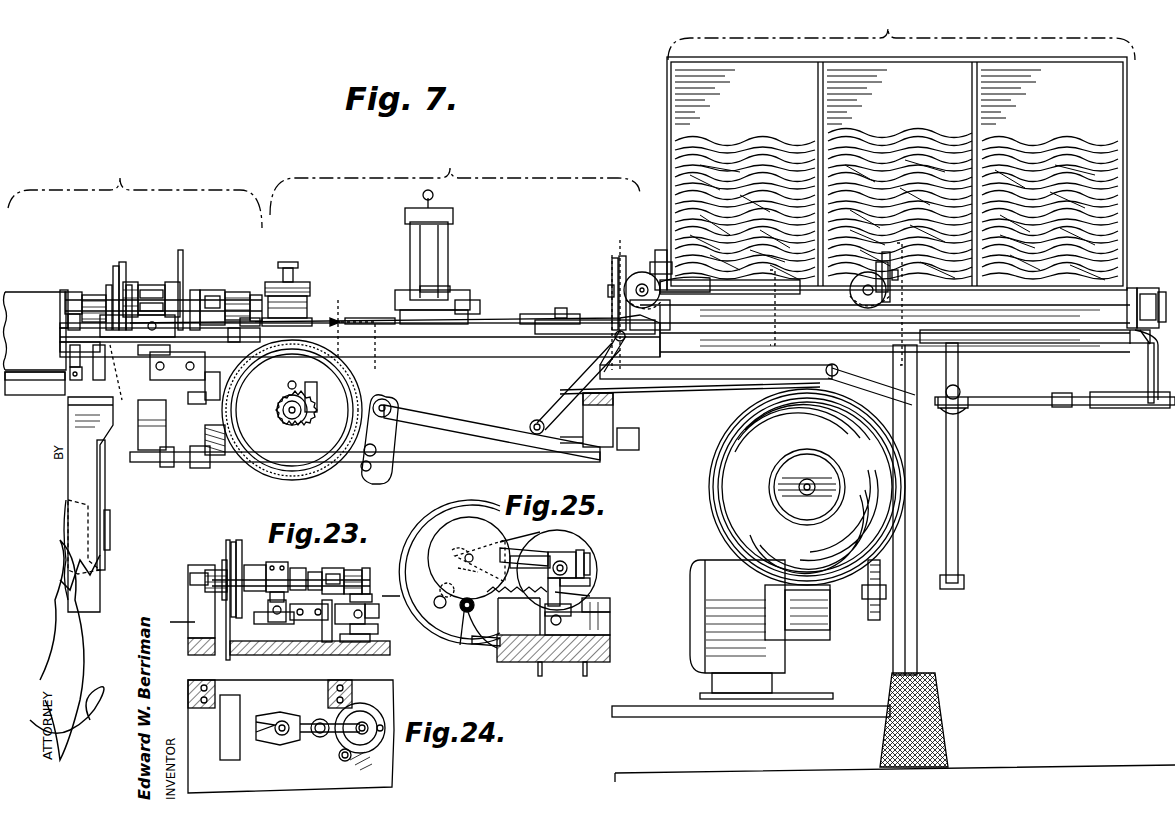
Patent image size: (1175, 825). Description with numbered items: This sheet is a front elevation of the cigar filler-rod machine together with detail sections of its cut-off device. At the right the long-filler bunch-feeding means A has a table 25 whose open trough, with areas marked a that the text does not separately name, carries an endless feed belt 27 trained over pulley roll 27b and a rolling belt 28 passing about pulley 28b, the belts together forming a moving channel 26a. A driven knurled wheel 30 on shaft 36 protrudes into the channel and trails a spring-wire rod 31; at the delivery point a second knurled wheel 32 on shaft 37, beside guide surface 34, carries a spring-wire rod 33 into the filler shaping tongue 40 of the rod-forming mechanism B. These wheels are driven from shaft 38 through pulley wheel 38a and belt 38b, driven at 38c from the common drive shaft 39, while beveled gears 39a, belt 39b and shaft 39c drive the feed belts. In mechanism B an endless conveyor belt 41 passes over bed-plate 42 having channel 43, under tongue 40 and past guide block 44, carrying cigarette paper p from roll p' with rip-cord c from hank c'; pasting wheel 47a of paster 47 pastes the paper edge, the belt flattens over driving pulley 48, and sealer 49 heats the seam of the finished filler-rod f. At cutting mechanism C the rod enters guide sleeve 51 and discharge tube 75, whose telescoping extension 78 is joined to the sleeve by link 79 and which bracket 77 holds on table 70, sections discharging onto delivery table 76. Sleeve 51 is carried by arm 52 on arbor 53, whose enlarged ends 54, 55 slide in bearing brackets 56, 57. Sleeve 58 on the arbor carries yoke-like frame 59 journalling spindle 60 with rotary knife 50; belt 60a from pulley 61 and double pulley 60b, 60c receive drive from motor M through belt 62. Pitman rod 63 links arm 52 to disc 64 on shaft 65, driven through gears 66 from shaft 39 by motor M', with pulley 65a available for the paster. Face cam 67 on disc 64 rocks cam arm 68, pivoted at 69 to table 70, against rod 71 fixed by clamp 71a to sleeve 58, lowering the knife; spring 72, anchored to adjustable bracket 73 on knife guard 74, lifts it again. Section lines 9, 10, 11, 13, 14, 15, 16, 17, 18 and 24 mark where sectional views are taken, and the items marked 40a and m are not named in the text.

In FIG. 7, the long-filler bunch-feeding means A is at (901, 146).
In FIG. 7, the bale compartment a is at (896, 175).
In FIG. 7, the filler rod-forming mechanism B is at (455, 176).
In FIG. 7, the cutting mechanism C is at (135, 188).
In FIG. 7, the section line 9 is at (887, 243).
In FIG. 7, the section line 10 is at (760, 270).
In FIG. 7, the section line 11 is at (652, 240).
In FIG. 7, the section line 13 is at (598, 272).
In FIG. 7, the section line 14 is at (528, 312).
In FIG. 7, the section line 15 is at (426, 314).
In FIG. 7, the section line 16 is at (380, 297).
In FIG. 7, the section line 17 is at (350, 322).
In FIG. 7, the section line 18 is at (326, 312).
In FIG. 23, the section line 24— 24 is at (385, 588).
In FIG. 7, the table 25 is at (975, 328).
In FIG. 7, the moving channel 26a is at (1126, 258).
In FIG. 7, the endless feed belt 27 is at (1090, 343).
In FIG. 7, the pulley roll 27b is at (1129, 347).
In FIG. 7, the endless rolling belt 28 is at (1142, 285).
In FIG. 7, the pulley 28b is at (1155, 331).
In FIG. 7, the driven knurled wheel 30 is at (862, 272).
In FIG. 7, the spring-wire rod 31 is at (866, 242).
In FIG. 7, the second driven knurled wheel 32 is at (640, 278).
In FIG. 7, the spring-wire rod 33 is at (672, 270).
In FIG. 7, the guide surface 34 is at (668, 312).
In FIG. 7, the shaft 36 is at (860, 283).
In FIG. 7, the shaft 37 is at (700, 280).
In FIG. 7, the shaft 38 is at (798, 282).
In FIG. 7, the pulley wheel 38a is at (612, 262).
In FIG. 7, the belt 38b is at (624, 262).
In FIG. 7, the drive connection 38c is at (630, 450).
In FIG. 7, the common drive shaft 39 is at (552, 448).
In FIG. 7, the beveled gears 39a is at (965, 415).
In FIG. 7, the belt 39b is at (1022, 397).
In FIG. 7, the shaft 39c is at (1148, 372).
In FIG. 7, the conical filler shaping tongue 40 is at (575, 320).
In FIG. 7, the carriage plate 40a is at (535, 322).
In FIG. 7, the endless conveyor belt 41 is at (330, 320).
In FIG. 7, the bed-plate 42 is at (475, 340).
In FIG. 7, the channel 43 is at (883, 395).
In FIG. 7, the guide block 44 is at (358, 320).
In FIG. 7, the paster device 47 is at (448, 248).
In FIG. 7, the pasting wheel 47a is at (425, 300).
In FIG. 7, the driving pulley wheel 48 is at (290, 468).
In FIG. 7, the sealer 49 is at (303, 282).
In FIG. 7, the rotary circular knife 50 is at (182, 290).
In FIG. 25, the rotary circular knife 50 is at (485, 535).
In FIG. 7, the guide sleeve 51 is at (252, 311).
In FIG. 7, the arm 52 is at (197, 292).
In FIG. 23, the arm 52 is at (322, 572).
In FIG. 7, the arbor 53 is at (68, 294).
In FIG. 23, the arbor 53 is at (370, 572).
In FIG. 25, the arbor 53 is at (560, 548).
In FIG. 7, the enlarged angular end portion 54 is at (240, 292).
In FIG. 23, the enlarged angular end portion 54 is at (355, 572).
In FIG. 7, the enlarged angular end portion 55 is at (94, 294).
In FIG. 23, the enlarged angular end portion 55 is at (215, 570).
In FIG. 7, the bearing bracket 56 is at (215, 290).
In FIG. 23, the bearing bracket 56 is at (335, 572).
In FIG. 24, the bearing bracket 56 is at (350, 680).
In FIG. 7, the bearing bracket 57 is at (72, 290).
In FIG. 23, the bearing bracket 57 is at (190, 572).
In FIG. 24, the bearing bracket 57 is at (215, 682).
In FIG. 25, the bearing bracket 57 is at (605, 622).
In FIG. 25, the sleeve 58 is at (592, 570).
In FIG. 7, the yoke-like supporting frame 59 is at (134, 282).
In FIG. 23, the yoke-like supporting frame 59 is at (255, 565).
In FIG. 25, the yoke-like supporting frame 59 is at (538, 560).
In FIG. 7, the spindle 60 is at (151, 289).
In FIG. 25, the spindle 60 is at (466, 551).
In FIG. 7, the belt 60a is at (124, 262).
In FIG. 23, the belt 60a is at (240, 545).
In FIG. 25, the belt 60a is at (530, 546).
In FIG. 7, the double pulley 60b is at (115, 268).
In FIG. 23, the double pulley 60b is at (232, 545).
In FIG. 25, the double pulley 60b is at (585, 552).
In FIG. 7, the double pulley 60c is at (99, 296).
In FIG. 23, the double pulley 60c is at (226, 572).
In FIG. 25, the double pulley 60c is at (595, 556).
In FIG. 7, the pulley 61 is at (113, 268).
In FIG. 25, the pulley 61 is at (455, 556).
In FIG. 7, the belt 62 is at (106, 498).
In FIG. 23, the belt 62 is at (225, 652).
In FIG. 25, the belt 62 is at (580, 665).
In FIG. 7, the pitman rod 63 is at (240, 330).
In FIG. 23, the pitman rod 63 is at (372, 600).
In FIG. 24, the pitman rod 63 is at (358, 715).
In FIG. 7, the disc 64 is at (270, 380).
In FIG. 23, the disc 64 is at (362, 620).
In FIG. 24, the disc 64 is at (372, 712).
In FIG. 7, the shaft 65 is at (212, 358).
In FIG. 23, the shaft 65 is at (372, 648).
In FIG. 7, the pulley 65a is at (190, 400).
In FIG. 23, the pulley 65a is at (378, 630).
In FIG. 7, the gears 66 is at (222, 422).
In FIG. 23, the face cam 67 is at (375, 612).
In FIG. 24, the face cam 67 is at (386, 716).
In FIG. 7, the cam arm 68 is at (152, 358).
In FIG. 23, the cam arm 68 is at (304, 622).
In FIG. 24, the cam arm 68 is at (338, 752).
In FIG. 25, the cam arm 68 is at (592, 604).
In FIG. 23, the pivot 69 is at (330, 644).
In FIG. 24, the pivot 69 is at (318, 720).
In FIG. 7, the table 70 is at (130, 395).
In FIG. 23, the table 70 is at (300, 645).
In FIG. 24, the table 70 is at (398, 776).
In FIG. 25, the table 70 is at (610, 645).
In FIG. 23, the rod 71 is at (272, 622).
In FIG. 24, the rod 71 is at (292, 718).
In FIG. 25, the rod 71 is at (590, 588).
In FIG. 23, the clamp 71a is at (275, 565).
In FIG. 25, the clamp 71a is at (575, 552).
In FIG. 7, the spring 72 is at (137, 323).
In FIG. 23, the spring 72 is at (272, 592).
In FIG. 25, the spring 72 is at (514, 600).
In FIG. 25, the adjustable bracket 73 is at (450, 562).
In FIG. 7, the knife guard 74 is at (150, 372).
In FIG. 25, the knife guard 74 is at (462, 500).
In FIG. 7, the discharge tube 75 is at (58, 342).
In FIG. 25, the discharge tube 75 is at (476, 608).
In FIG. 7, the delivery table 76 is at (25, 358).
In FIG. 7, the bracket 77 is at (68, 378).
In FIG. 7, the telescoping tubular extension 78 is at (128, 342).
In FIG. 25, the telescoping tubular extension 78 is at (466, 640).
In FIG. 7, the link 79 is at (176, 400).
In FIG. 7, the rip-cord c is at (773, 510).
In FIG. 7, the hank c' is at (895, 727).
In FIG. 7, the filler-rod f is at (250, 410).
In FIG. 25, the filler-rod f is at (452, 635).
In FIG. 7, the motor pulley m is at (866, 602).
In FIG. 7, the motor M is at (104, 550).
In FIG. 7, the motor M' is at (751, 638).
In FIG. 7, the cigarette paper strip p is at (690, 396).
In FIG. 7, the roll p' is at (793, 487).